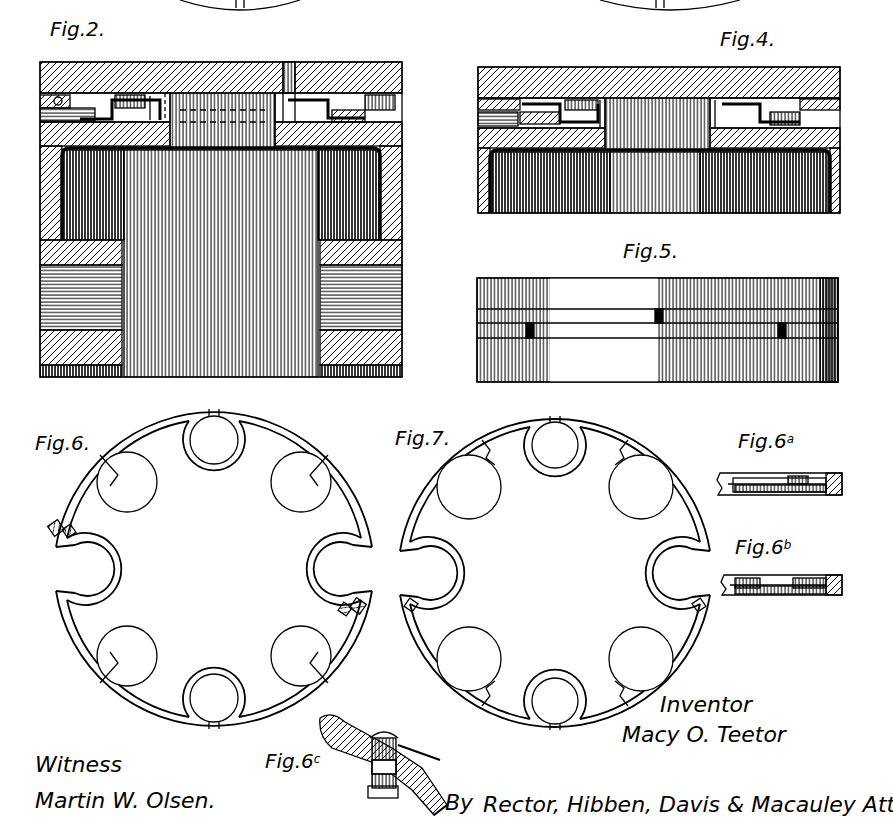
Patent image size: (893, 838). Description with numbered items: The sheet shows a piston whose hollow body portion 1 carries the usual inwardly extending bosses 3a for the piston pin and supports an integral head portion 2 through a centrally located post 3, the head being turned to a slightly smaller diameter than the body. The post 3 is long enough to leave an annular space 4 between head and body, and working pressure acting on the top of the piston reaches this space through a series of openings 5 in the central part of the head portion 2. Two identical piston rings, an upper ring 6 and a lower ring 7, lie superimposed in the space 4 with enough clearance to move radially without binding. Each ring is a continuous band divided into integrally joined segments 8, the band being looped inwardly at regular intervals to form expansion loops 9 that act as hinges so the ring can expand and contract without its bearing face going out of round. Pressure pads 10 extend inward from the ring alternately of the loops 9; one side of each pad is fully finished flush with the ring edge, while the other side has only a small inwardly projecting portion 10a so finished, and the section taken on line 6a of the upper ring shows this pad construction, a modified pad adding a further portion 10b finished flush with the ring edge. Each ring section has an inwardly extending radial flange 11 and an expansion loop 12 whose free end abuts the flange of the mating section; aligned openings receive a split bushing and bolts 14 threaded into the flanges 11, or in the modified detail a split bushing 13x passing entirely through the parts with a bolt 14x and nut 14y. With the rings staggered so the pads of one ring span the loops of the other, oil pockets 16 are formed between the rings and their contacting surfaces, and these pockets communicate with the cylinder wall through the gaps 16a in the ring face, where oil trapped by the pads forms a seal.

In FIG. 2, the body portion 1 is at (405, 203).
In FIG. 4, the body portion 1 is at (659, 140).
In FIG. 5, the body portion 1 is at (477, 355).
In FIG. 2, the head portion 2 is at (330, 80).
In FIG. 4, the head portion 2 is at (490, 68).
In FIG. 5, the head portion 2 is at (580, 290).
In FIG. 2, the centrally located post 3 is at (262, 150).
In FIG. 4, the centrally located post 3 is at (705, 122).
In FIG. 2, the inwardly extending bosses 3a is at (320, 250).
In FIG. 2, the space 4 is at (150, 100).
In FIG. 4, the space 4 is at (585, 125).
In FIG. 2, the openings 5 is at (170, 95).
In FIG. 2, the upper ring 6 is at (70, 93).
In FIG. 4, the upper ring 6 is at (478, 104).
In FIG. 5, the upper ring 6 is at (540, 315).
In FIG. 6, the upper ring 6 is at (61, 509).
In FIG. 6A, the upper ring 6 is at (838, 496).
In FIG. 6B, the upper ring 6 is at (838, 596).
In FIG. 6C, the upper ring 6 is at (428, 800).
In FIG. 6, the section line 6a is at (366, 500).
In FIG. 2, the lower ring 7 is at (85, 98).
In FIG. 4, the lower ring 7 is at (478, 125).
In FIG. 5, the lower ring 7 is at (575, 330).
In FIG. 7, the lower ring 7 is at (672, 454).
In FIG. 6, the segments 8 is at (128, 440).
In FIG. 2, the expansion loops 9 is at (318, 125).
In FIG. 4, the expansion loops 9 is at (600, 100).
In FIG. 6, the expansion loops 9 is at (230, 470).
In FIG. 7, the expansion loops 9 is at (570, 462).
In FIG. 2, the pressure pads 10 is at (300, 140).
In FIG. 4, the pressure pads 10 is at (560, 105).
In FIG. 6, the pressure pads 10 is at (140, 505).
In FIG. 7, the pressure pads 10 is at (488, 500).
In FIG. 6A, the pressure pads 10 is at (735, 485).
In FIG. 6B, the pressure pads 10 is at (755, 595).
In FIG. 2, the inwardly projecting portion 10a is at (320, 110).
In FIG. 4, the inwardly projecting portion 10a is at (520, 98).
In FIG. 6, the inwardly projecting portion 10a is at (118, 477).
In FIG. 6A, the inwardly projecting portion 10a is at (805, 480).
In FIG. 6B, the inwardly projecting portion 10a is at (800, 580).
In FIG. 6B, the additional pad portion 10b is at (740, 580).
In FIG. 6, the radial flange 11 is at (85, 532).
In FIG. 7, the radial flange 11 is at (555, 605).
In FIG. 6C, the radial flange 11 is at (372, 770).
In FIG. 2, the expansion loop 12 is at (115, 97).
In FIG. 6, the expansion loop 12 is at (115, 580).
In FIG. 7, the expansion loop 12 is at (455, 575).
In FIG. 6C, the expansion loop 12 is at (345, 722).
In FIG. 6C, the split bushing 13x is at (420, 755).
In FIG. 2, the bolts 14 is at (55, 118).
In FIG. 6, the bolts 14 is at (80, 530).
In FIG. 6C, the bolt 14x is at (398, 738).
In FIG. 6C, the nut 14y is at (375, 790).
In FIG. 2, the oil pockets 16 is at (390, 95).
In FIG. 4, the oil pockets 16 is at (478, 175).
In FIG. 2, the gaps 16a is at (238, 8).
In FIG. 4, the gaps 16a is at (660, 8).
In FIG. 5, the gaps 16a is at (665, 310).
In FIG. 6, the gaps 16a is at (220, 414).
In FIG. 7, the gaps 16a is at (552, 725).